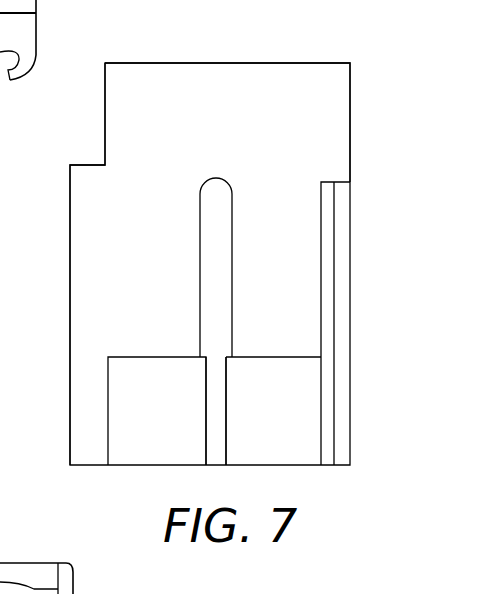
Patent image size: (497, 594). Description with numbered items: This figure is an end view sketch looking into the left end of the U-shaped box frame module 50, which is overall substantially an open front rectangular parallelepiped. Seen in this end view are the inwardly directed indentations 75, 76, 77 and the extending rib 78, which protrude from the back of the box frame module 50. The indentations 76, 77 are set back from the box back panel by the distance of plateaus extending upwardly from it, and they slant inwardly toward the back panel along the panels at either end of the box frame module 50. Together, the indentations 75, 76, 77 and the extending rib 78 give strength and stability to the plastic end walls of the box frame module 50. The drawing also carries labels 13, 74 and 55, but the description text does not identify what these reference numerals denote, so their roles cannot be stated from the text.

The box frame module 50 is at (281, 60).
The housing wall 13 is at (91, 150).
The upper body portion 74 is at (336, 127).
The indentation 75 is at (226, 224).
The side slot 55 is at (338, 284).
The indentation 76 is at (150, 446).
The extending rib 78 is at (216, 453).
The indentation 77 is at (293, 448).